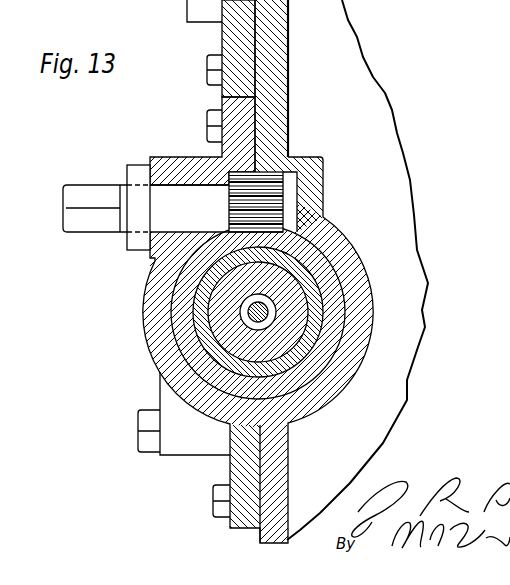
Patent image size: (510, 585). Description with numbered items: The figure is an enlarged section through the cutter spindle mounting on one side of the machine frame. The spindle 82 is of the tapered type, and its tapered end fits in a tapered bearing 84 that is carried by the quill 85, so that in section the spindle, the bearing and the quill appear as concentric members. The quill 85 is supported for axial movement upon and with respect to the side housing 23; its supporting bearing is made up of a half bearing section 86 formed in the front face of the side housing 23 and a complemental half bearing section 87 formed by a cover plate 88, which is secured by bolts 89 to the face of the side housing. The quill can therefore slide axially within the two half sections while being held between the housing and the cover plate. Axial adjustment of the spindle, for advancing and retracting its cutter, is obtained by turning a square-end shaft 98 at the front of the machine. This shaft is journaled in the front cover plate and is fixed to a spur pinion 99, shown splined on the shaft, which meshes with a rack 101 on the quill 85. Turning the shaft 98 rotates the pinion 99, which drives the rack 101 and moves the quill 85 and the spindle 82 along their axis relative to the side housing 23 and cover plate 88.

The side housing 23 is at (277, 70).
The spindle 82 is at (292, 328).
The tapered bearing 84 is at (203, 288).
The quill 85 is at (333, 267).
The half bearing section 86 is at (343, 295).
The complemental half bearing section 87 is at (168, 340).
The cover plate 88 is at (236, 461).
The bolts 89 is at (145, 436).
The square-end shaft 98 is at (80, 188).
The spur pinion 99 is at (265, 193).
The rack 101 is at (283, 232).